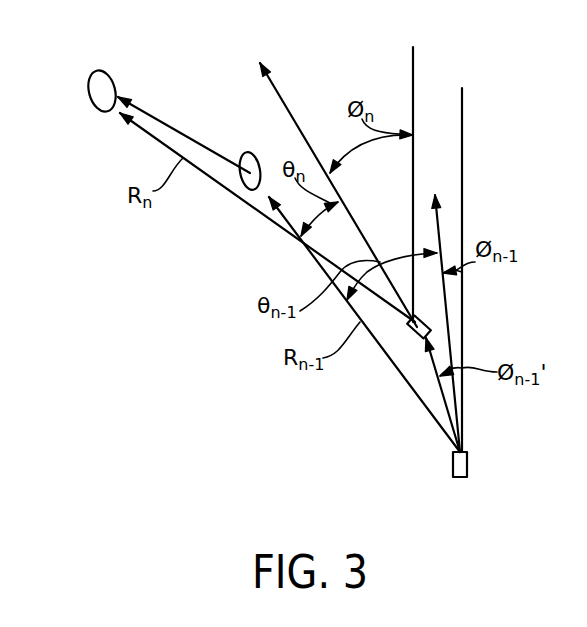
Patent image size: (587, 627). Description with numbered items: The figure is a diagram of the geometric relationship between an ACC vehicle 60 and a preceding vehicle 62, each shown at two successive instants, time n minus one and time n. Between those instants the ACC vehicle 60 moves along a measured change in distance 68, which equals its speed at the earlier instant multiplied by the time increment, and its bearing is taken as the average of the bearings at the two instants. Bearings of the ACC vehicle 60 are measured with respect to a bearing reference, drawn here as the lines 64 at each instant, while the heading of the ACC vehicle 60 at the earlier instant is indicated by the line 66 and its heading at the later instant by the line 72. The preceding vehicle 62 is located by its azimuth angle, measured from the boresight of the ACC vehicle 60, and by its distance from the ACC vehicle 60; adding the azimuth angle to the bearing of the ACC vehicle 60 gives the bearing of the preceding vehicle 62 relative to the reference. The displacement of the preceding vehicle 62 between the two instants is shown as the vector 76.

The ACC vehicle 60 is at (408, 333).
The preceding vehicle 62 is at (92, 93).
The reference (north) direction line 64 is at (413, 47).
The own ship heading at t=n-1 66 is at (447, 317).
The measured change in distance 68 is at (446, 406).
The own ship heading at t=n 72 is at (293, 115).
The target displacement vector 76 is at (160, 118).